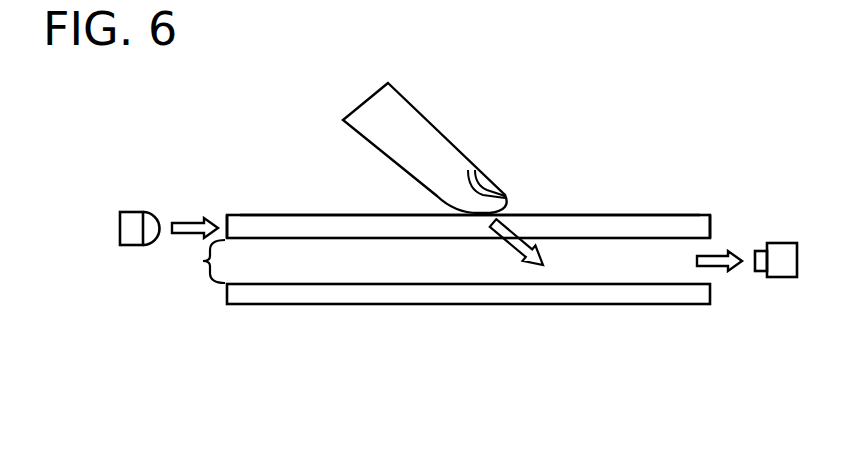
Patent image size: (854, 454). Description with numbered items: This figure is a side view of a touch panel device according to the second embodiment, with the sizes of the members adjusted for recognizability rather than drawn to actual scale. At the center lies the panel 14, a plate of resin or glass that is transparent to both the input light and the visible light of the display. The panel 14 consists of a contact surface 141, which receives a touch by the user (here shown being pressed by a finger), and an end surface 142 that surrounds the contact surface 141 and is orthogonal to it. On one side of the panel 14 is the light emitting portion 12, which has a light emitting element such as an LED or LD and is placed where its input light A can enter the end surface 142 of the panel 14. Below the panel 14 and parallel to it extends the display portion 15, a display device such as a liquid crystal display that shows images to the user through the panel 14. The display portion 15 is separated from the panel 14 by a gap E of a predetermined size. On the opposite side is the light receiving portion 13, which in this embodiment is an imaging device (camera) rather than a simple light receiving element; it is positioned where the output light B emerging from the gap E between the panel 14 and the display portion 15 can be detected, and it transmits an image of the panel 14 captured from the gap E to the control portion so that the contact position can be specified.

The light emitting portion 12 is at (133, 208).
The light receiving portion 13 is at (792, 243).
The panel 14 is at (538, 223).
The contact surface 141 is at (613, 215).
The end surface 142 is at (225, 215).
The display portion 15 is at (603, 305).
The input light A is at (200, 217).
The output light B is at (732, 252).
The gap E is at (204, 261).